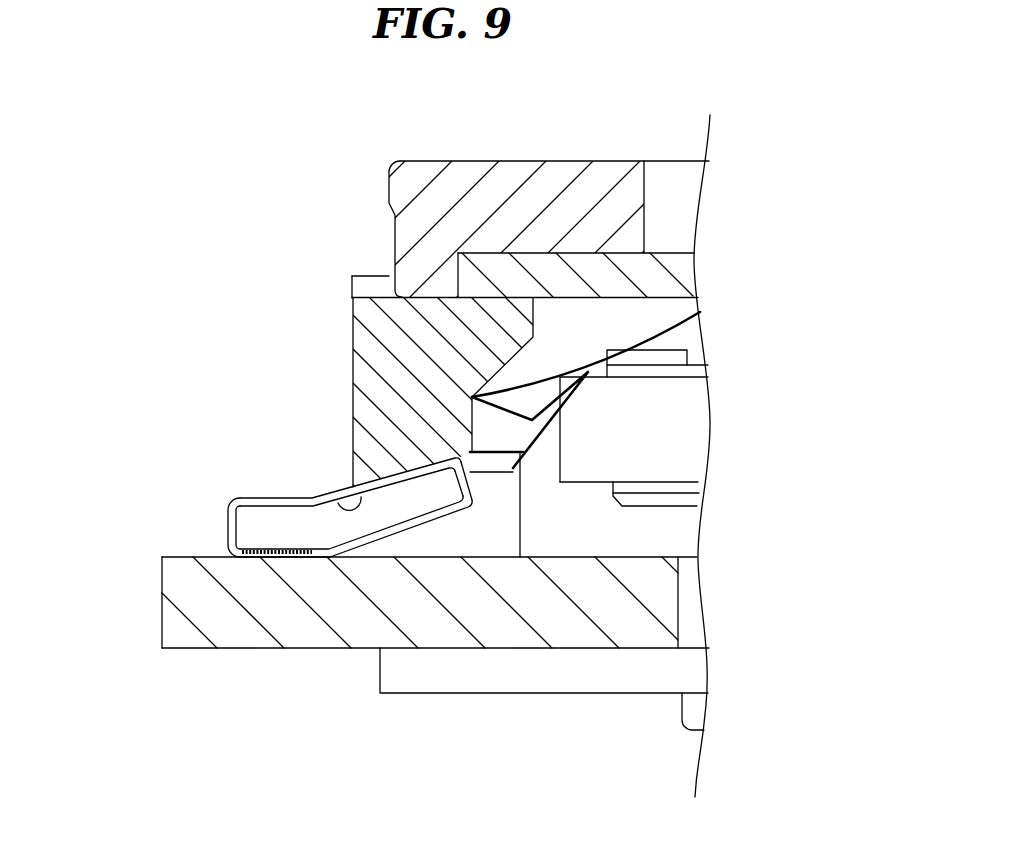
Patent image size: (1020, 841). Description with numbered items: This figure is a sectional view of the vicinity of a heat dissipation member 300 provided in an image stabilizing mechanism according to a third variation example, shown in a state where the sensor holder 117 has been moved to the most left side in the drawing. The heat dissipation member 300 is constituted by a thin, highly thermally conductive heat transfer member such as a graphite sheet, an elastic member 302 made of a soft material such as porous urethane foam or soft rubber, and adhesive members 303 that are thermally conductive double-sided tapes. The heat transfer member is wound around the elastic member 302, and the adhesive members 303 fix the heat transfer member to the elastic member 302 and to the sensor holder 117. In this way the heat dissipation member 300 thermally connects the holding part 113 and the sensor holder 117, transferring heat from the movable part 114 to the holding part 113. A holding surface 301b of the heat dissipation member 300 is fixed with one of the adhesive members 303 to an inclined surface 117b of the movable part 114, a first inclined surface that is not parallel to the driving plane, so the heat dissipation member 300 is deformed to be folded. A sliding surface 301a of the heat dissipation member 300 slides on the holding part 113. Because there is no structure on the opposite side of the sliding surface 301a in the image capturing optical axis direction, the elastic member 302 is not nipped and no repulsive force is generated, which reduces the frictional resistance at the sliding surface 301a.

The holding part 113 is at (177, 602).
The movable part 114 is at (493, 182).
The sensor holder 117 is at (538, 416).
The inclined surface 117b is at (470, 474).
The heat dissipation member 300 is at (289, 561).
The sliding surface 301a is at (267, 558).
The holding surface 301b is at (437, 453).
The elastic member 302 is at (248, 527).
The adhesive members 303 is at (400, 472).